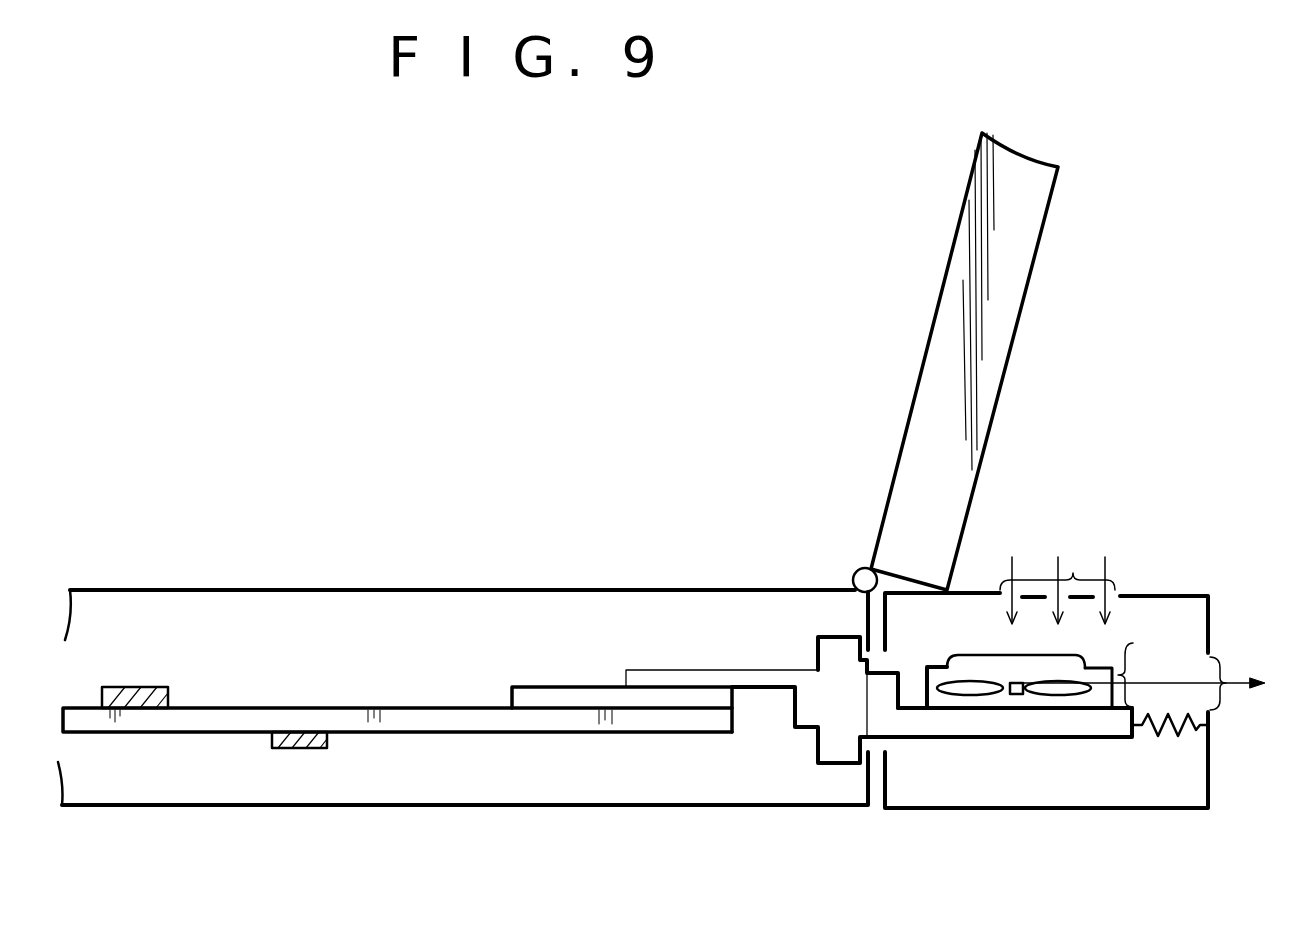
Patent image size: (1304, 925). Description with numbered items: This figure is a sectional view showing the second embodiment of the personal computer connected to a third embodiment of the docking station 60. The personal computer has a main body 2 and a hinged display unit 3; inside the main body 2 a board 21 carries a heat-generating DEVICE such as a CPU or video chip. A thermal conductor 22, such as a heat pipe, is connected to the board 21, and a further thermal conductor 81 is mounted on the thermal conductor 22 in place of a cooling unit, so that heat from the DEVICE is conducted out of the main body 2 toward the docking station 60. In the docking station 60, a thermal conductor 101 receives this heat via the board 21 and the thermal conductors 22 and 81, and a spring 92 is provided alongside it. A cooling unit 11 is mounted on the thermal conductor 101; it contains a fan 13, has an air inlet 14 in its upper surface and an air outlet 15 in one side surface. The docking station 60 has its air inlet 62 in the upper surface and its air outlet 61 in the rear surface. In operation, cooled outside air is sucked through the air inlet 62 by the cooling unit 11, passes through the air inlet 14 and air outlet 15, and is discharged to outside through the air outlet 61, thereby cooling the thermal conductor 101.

The main body 2 is at (722, 806).
The display unit 3 is at (941, 327).
The board 21 is at (462, 708).
The thermal conductor 22 is at (562, 700).
The thermal conductor 81 is at (694, 670).
The device DEVICE is at (147, 702).
The docking station 60 is at (973, 808).
The cooling unit 11 is at (935, 667).
The air inlet 14 is at (985, 655).
The fan 13 is at (973, 692).
The thermal conductor 101 is at (1036, 737).
The spring 92 is at (1155, 728).
The air inlet 62 is at (1073, 573).
The air outlet 15 is at (1133, 660).
The air outlet 61 is at (1228, 678).